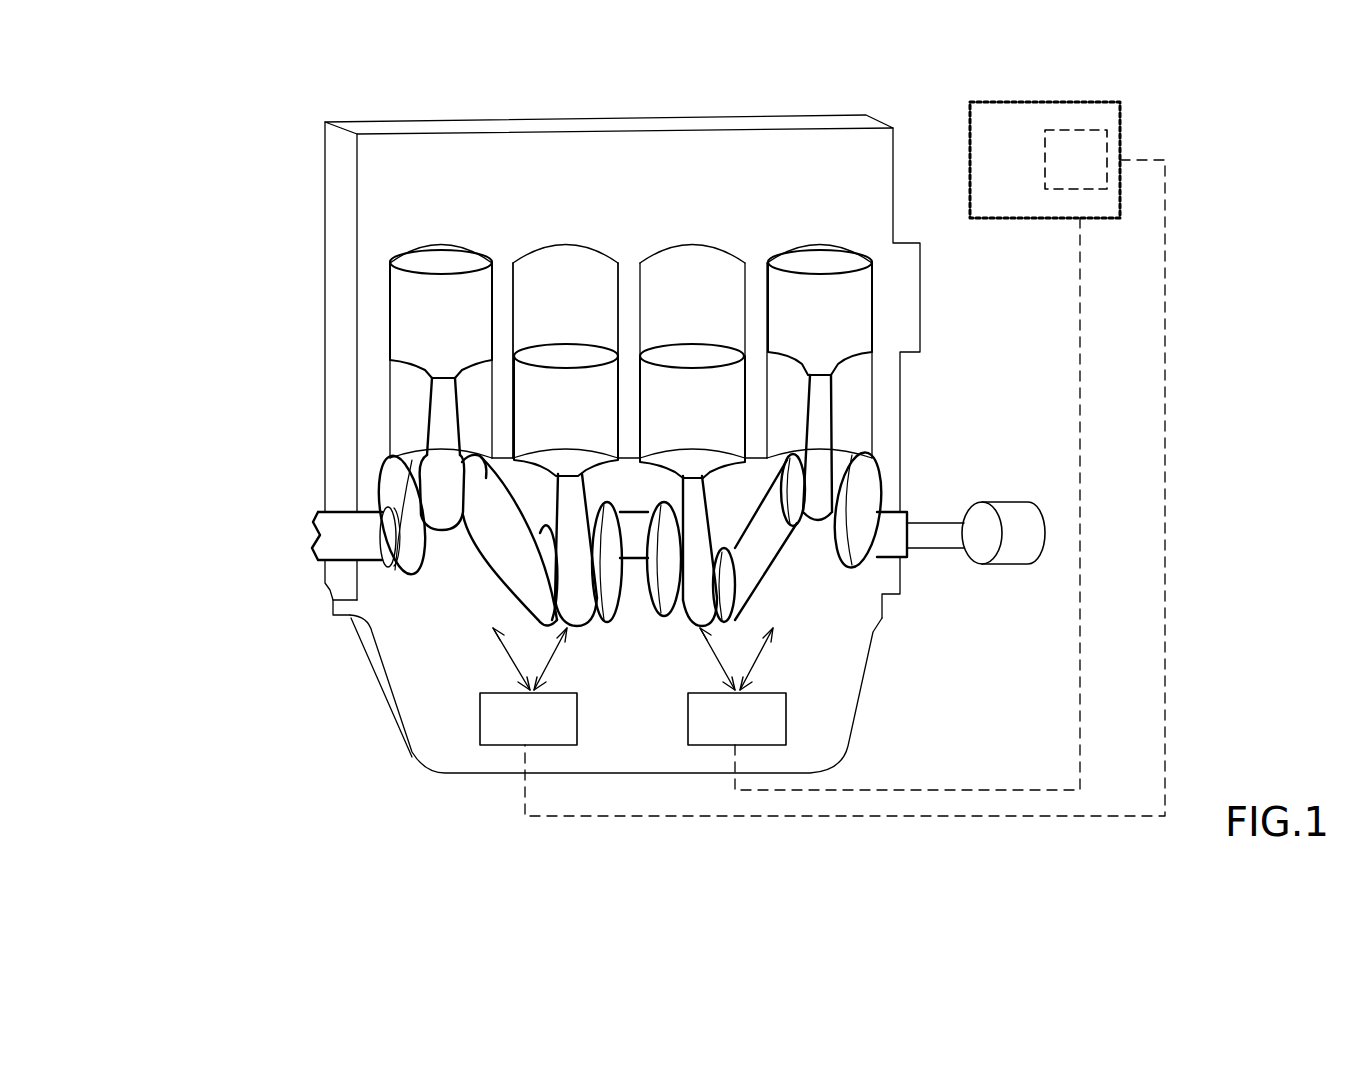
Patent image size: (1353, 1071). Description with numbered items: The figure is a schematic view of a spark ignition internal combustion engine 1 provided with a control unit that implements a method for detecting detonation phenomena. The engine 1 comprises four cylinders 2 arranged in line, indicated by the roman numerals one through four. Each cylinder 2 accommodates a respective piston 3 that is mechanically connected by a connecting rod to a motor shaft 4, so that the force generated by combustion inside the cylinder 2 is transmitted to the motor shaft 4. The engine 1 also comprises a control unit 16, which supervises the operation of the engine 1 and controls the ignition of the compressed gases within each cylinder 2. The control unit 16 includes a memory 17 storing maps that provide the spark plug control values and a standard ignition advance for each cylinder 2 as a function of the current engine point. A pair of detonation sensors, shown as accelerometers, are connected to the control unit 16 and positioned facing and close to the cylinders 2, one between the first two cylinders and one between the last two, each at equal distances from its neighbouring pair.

The spark ignition internal combustion engine 1 is at (222, 178).
The cylinder 2 is at (566, 268).
The piston 3 is at (835, 327).
The motor shaft 4 is at (330, 522).
The control unit 16 is at (1045, 160).
The memory 17 is at (1076, 159).